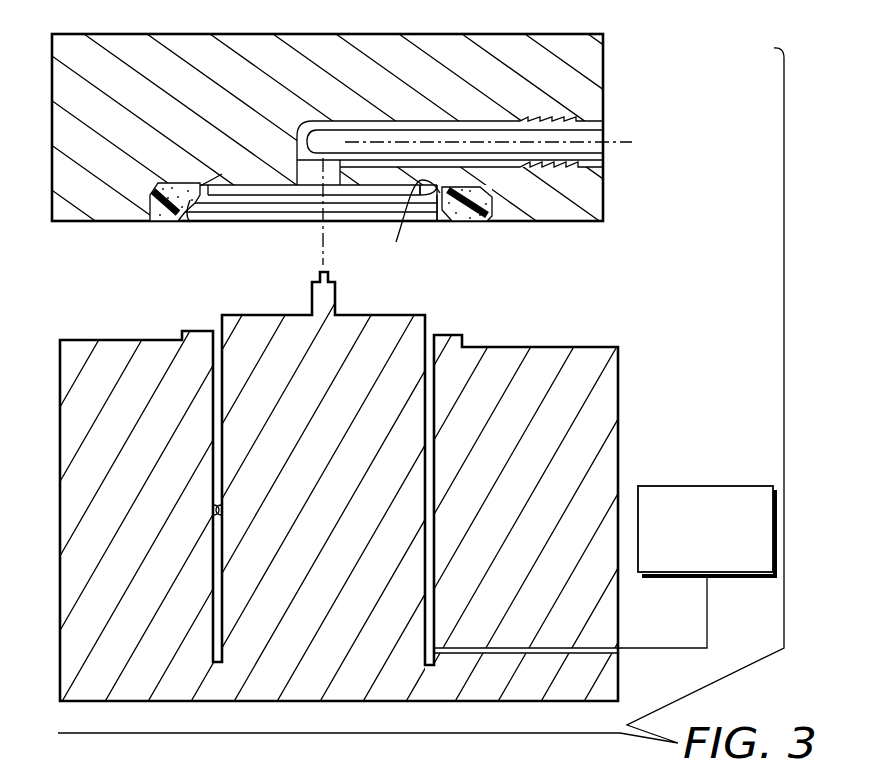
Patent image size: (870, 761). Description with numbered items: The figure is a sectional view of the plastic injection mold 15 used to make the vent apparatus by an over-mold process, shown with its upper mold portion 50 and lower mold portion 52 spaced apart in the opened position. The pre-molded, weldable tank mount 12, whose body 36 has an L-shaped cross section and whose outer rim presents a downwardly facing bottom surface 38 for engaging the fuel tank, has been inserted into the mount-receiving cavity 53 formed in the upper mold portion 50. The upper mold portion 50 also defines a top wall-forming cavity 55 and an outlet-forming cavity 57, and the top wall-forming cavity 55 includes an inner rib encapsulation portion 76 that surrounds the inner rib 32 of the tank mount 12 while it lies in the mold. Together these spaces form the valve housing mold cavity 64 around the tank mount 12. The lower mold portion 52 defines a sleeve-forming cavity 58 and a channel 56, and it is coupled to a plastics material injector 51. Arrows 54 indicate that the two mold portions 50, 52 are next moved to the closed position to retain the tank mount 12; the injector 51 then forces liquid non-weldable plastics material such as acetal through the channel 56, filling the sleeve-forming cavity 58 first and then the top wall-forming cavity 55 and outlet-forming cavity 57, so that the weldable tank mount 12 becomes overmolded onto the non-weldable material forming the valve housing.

The tank mount 12 is at (497, 212).
The plastic injection mold 15 is at (655, 100).
The inner rib 32 is at (190, 210).
The body 36 is at (172, 218).
The bottom surface 38 is at (470, 222).
The upper mold portion 50 is at (47, 147).
The plastics material injector 51 is at (725, 486).
The lower mold portion 52 is at (625, 417).
The mount-receiving cavity 53 is at (160, 212).
The arrows 54 is at (120, 263).
The top wall-forming cavity 55 is at (246, 212).
The channel 56 is at (565, 652).
The outlet-forming cavity 57 is at (396, 130).
The sleeve-forming cavity 58 is at (217, 456).
The valve housing mold cavity 64 is at (428, 230).
The inner rib encapsulation portion 76 is at (222, 174).